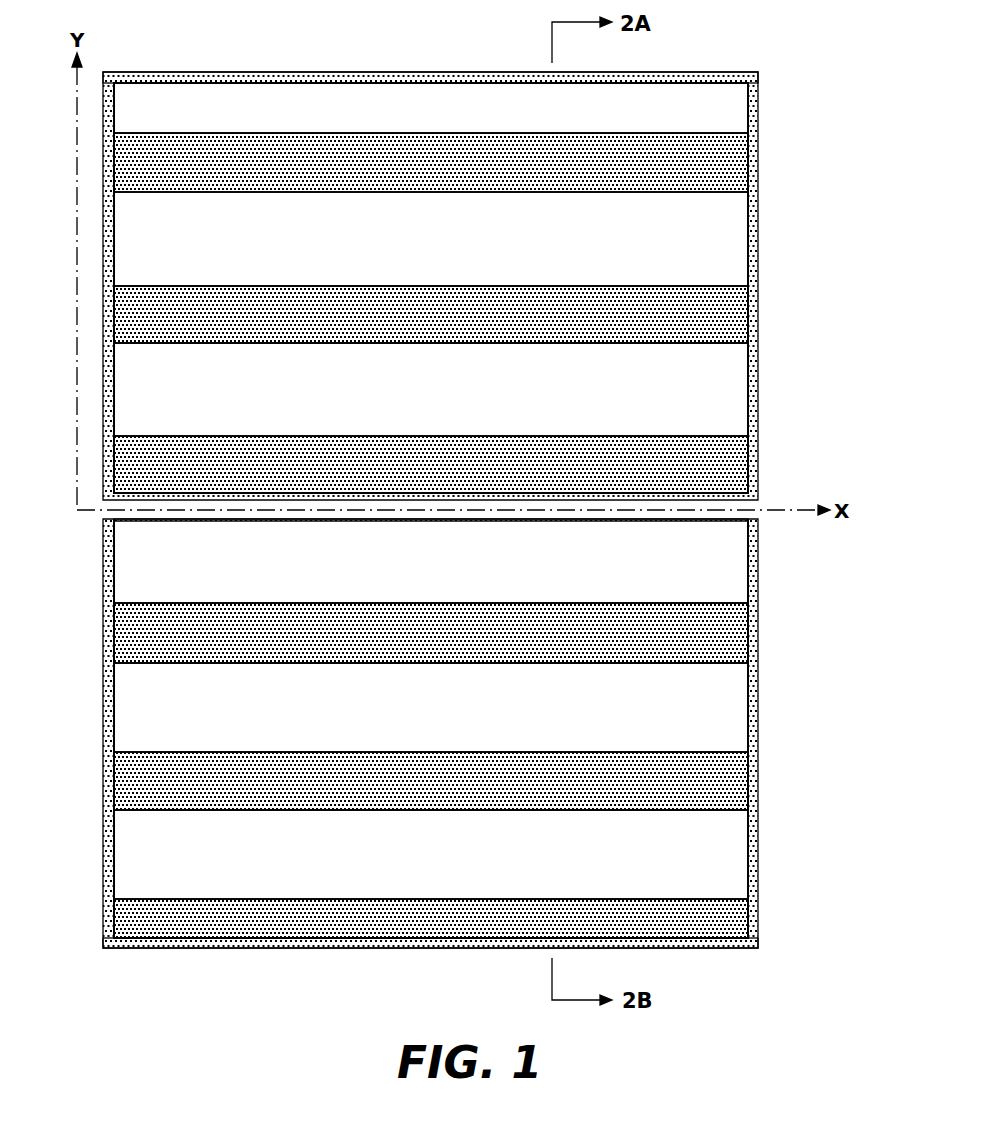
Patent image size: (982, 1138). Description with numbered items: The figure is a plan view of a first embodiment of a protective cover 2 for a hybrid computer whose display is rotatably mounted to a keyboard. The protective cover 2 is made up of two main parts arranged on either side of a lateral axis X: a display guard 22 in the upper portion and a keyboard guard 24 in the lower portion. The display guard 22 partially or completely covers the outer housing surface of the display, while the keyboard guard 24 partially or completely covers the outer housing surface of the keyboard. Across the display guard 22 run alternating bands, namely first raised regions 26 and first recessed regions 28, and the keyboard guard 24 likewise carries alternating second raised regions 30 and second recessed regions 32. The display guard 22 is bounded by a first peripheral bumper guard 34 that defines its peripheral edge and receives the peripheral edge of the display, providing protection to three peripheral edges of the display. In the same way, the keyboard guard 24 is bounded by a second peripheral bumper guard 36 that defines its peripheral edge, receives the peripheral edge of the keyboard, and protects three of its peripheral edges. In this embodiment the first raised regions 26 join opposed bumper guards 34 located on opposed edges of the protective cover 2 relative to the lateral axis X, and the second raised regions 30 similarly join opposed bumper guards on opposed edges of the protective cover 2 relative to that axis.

The protective cover 2 is at (735, 50).
The display guard 22 is at (814, 72).
The keyboard guard 24 is at (814, 519).
The first raised regions 26 is at (738, 156).
The first recessed regions 28 is at (738, 100).
The second raised regions 30 is at (738, 623).
The second recessed regions 32 is at (738, 560).
The first peripheral bumper guard 34 is at (194, 72).
The second peripheral bumper guard 36 is at (308, 950).